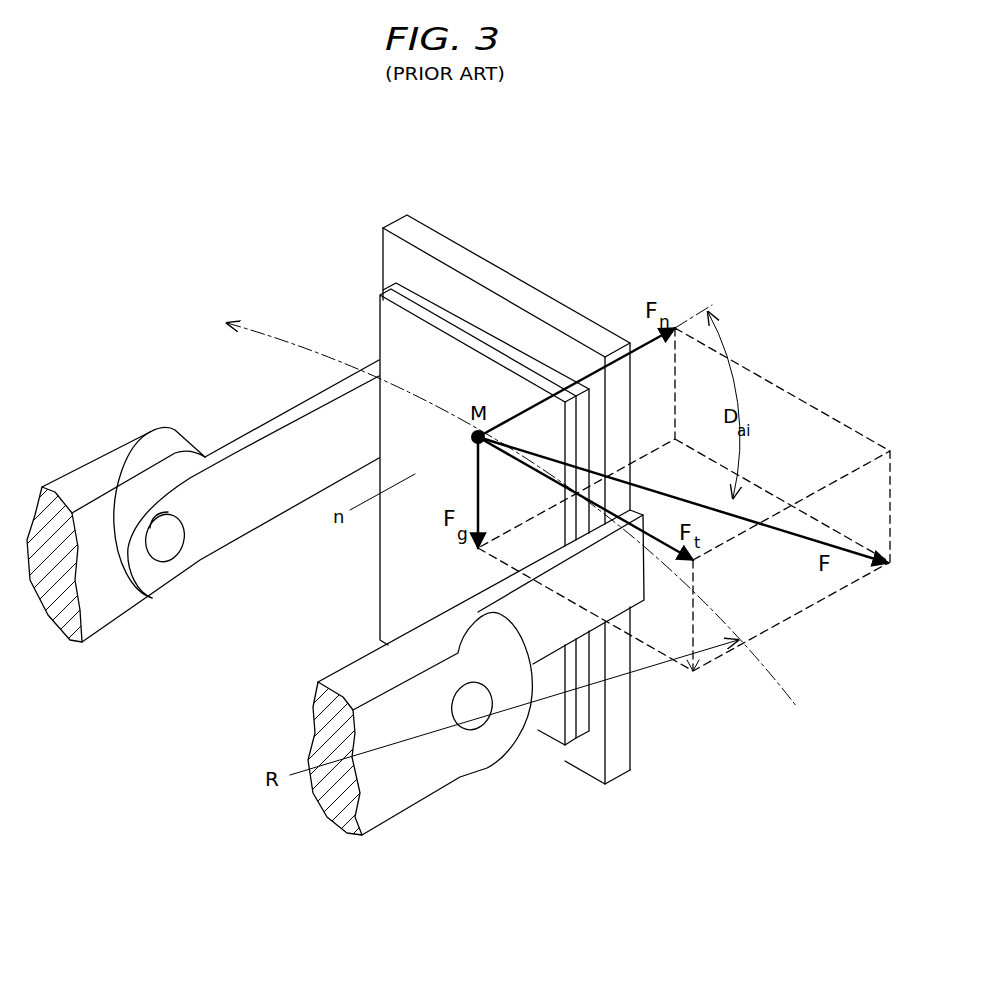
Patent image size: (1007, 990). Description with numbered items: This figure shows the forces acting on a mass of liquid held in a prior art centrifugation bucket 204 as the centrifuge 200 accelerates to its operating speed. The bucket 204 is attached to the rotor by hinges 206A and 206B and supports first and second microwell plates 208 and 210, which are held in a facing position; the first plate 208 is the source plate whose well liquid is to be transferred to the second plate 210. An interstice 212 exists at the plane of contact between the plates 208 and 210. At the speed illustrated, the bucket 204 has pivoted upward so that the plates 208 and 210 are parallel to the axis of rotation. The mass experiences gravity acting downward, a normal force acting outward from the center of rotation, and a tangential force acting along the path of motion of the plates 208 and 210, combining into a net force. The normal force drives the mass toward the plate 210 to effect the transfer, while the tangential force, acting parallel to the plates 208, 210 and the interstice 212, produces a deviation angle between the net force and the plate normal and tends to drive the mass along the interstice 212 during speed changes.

The centrifuge 200 is at (580, 260).
The centrifugation bucket 204 is at (623, 740).
The hinge 206A is at (157, 550).
The hinge 206B is at (473, 700).
The first microwell plate 208 is at (395, 288).
The second microwell plate 210 is at (403, 281).
The interstice 212 is at (483, 337).